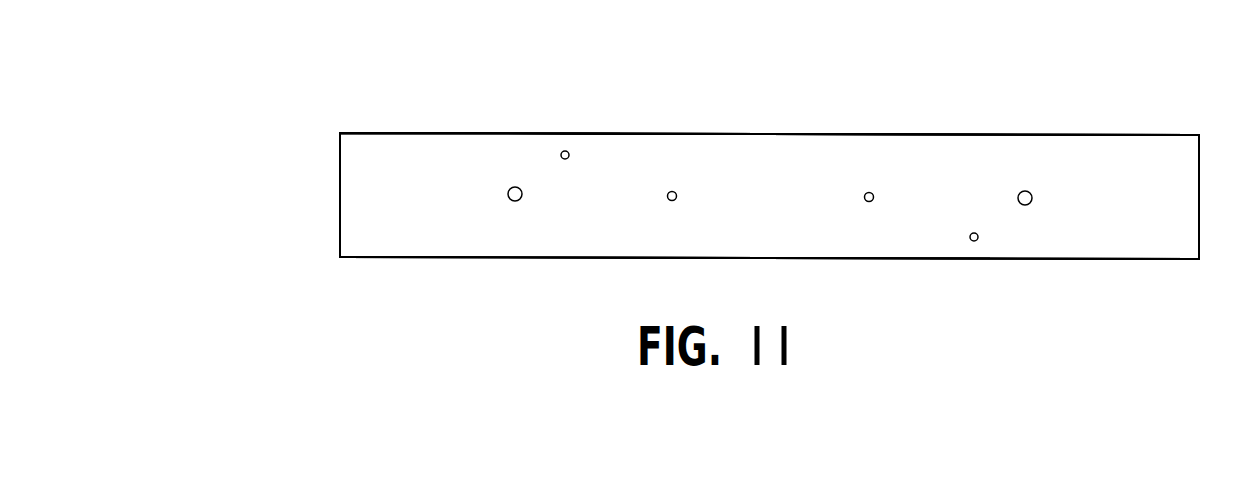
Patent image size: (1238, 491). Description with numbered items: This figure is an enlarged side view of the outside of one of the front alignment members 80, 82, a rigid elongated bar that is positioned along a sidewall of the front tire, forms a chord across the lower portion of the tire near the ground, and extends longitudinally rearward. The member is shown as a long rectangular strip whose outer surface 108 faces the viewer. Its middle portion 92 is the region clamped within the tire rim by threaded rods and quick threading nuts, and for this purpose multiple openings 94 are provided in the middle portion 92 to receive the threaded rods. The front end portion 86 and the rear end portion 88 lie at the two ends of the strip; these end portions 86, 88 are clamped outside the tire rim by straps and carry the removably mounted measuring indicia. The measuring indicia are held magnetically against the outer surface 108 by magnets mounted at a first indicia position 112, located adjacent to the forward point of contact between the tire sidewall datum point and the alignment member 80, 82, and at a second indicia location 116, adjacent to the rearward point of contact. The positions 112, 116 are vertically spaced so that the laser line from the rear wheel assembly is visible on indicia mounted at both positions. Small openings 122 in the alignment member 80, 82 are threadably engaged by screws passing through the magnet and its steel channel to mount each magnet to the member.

The alignment member 80 is at (285, 171).
The alignment member 82 is at (285, 171).
The front end portion 86 is at (1177, 135).
The rear end portion 88 is at (430, 133).
The middle portion 92 is at (821, 134).
The openings 94 is at (508, 200).
The outer surface 108 is at (622, 244).
The first indicia position 112 is at (945, 222).
The second indicia location 116 is at (590, 138).
The openings 122 is at (570, 157).